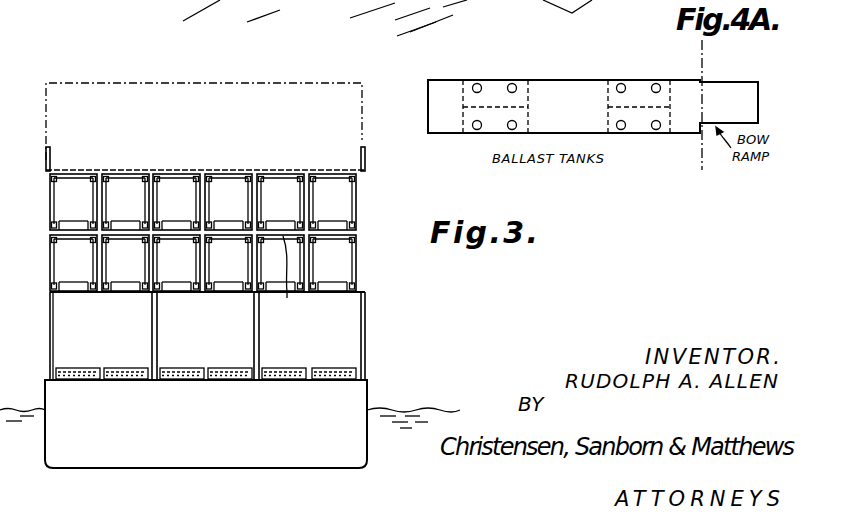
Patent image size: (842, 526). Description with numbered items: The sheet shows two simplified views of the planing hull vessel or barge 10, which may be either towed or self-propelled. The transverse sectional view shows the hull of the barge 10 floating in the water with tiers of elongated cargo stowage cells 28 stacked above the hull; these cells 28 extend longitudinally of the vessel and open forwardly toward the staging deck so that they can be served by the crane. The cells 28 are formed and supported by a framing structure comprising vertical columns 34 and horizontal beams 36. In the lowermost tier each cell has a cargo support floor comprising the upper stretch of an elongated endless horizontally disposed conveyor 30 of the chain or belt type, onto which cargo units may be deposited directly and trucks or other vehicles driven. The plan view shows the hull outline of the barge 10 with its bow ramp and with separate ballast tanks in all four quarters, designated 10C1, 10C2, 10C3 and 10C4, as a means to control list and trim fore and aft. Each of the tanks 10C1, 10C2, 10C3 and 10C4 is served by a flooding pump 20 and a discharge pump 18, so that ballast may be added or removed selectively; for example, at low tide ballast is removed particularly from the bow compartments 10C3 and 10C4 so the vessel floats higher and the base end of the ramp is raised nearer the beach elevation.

In FIG. 3, the planing hull vessel or barge 10 is at (370, 389).
In FIG. 4A, the discharge pump 18 is at (476, 83).
In FIG. 4A, the flooding pump 20 is at (512, 83).
In FIG. 3, the cargo stowage cells 28 is at (131, 271).
In FIG. 3, the conveyor 30 is at (109, 366).
In FIG. 3, the columns 34 is at (52, 203).
In FIG. 3, the beams 36 is at (287, 298).
In FIG. 4A, the ballast tank 10C1 is at (495, 106).
In FIG. 4A, the ballast tank 10C2 is at (496, 118).
In FIG. 4A, the bow ballast tank 10C3 is at (640, 118).
In FIG. 4A, the bow ballast tank 10C4 is at (639, 106).